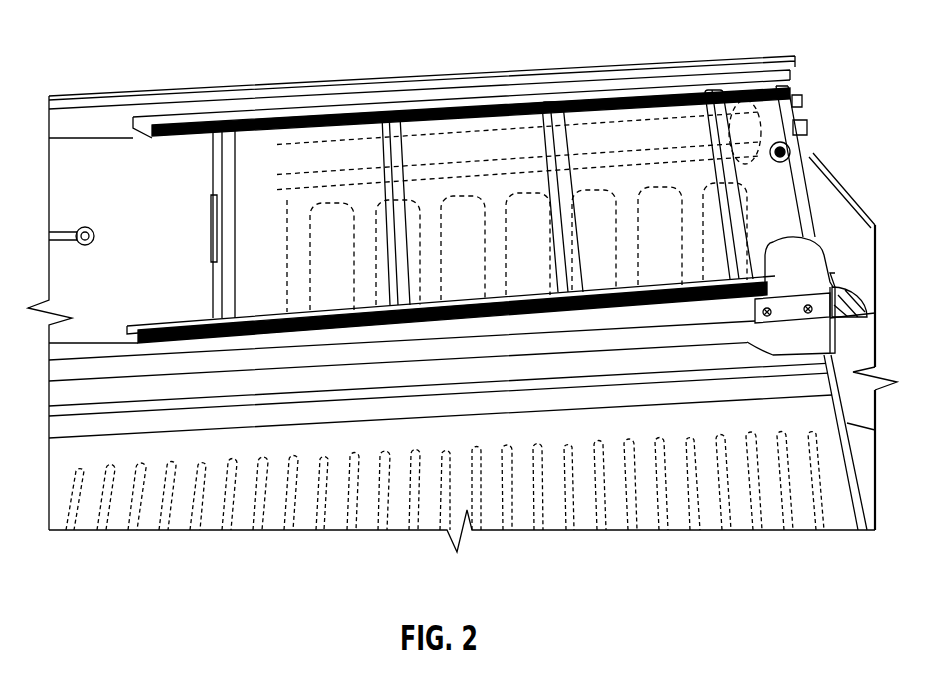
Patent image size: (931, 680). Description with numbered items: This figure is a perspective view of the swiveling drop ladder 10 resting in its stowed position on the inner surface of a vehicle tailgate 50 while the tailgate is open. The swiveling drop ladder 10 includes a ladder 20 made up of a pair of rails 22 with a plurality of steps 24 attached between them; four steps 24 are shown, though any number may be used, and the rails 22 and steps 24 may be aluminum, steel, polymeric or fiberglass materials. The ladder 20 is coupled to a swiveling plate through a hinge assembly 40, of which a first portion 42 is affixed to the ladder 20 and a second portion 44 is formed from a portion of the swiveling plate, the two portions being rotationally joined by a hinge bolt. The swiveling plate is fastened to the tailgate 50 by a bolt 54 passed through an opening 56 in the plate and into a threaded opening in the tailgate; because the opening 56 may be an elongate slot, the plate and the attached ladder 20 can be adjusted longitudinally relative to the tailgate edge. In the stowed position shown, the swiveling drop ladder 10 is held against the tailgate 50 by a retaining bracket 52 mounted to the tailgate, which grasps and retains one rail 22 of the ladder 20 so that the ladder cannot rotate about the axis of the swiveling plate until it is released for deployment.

The swiveling drop ladder 10 is at (724, 21).
The ladder 20 is at (419, 175).
The rails 22 is at (257, 113).
The steps 24 is at (398, 178).
The hinge assembly 40 is at (182, 78).
The first portion of the hinge assembly 42 is at (260, 197).
The second portion of the hinge assembly 44 is at (200, 293).
The vehicle tailgate 50 is at (80, 107).
The retaining bracket 52 is at (795, 273).
The bolt 54 is at (90, 229).
The opening 56 is at (63, 232).